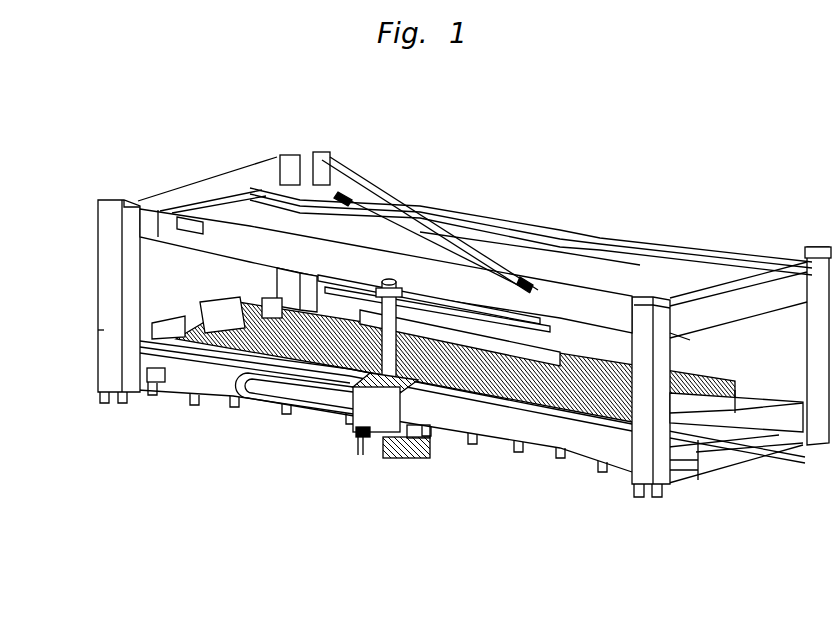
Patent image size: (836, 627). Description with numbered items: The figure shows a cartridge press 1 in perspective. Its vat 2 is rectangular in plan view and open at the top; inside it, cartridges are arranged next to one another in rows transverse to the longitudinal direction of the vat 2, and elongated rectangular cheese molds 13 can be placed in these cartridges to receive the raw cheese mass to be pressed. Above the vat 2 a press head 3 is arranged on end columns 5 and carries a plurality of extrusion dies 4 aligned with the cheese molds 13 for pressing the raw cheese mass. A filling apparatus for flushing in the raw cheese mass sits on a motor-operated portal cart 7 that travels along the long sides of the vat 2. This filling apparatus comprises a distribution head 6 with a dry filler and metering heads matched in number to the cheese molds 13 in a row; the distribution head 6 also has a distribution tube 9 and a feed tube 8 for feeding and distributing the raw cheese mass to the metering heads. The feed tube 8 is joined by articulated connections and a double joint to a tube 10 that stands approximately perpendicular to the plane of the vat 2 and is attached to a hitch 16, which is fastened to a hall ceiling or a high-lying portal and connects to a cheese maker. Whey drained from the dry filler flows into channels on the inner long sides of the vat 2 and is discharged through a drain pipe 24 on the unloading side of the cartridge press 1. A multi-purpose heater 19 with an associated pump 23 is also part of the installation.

The cartridge press 1 is at (520, 540).
The vat 2 is at (214, 377).
The press head 3 is at (386, 271).
The extrusion dies 4 is at (203, 266).
The end columns 5 is at (138, 266).
The distribution head 6 is at (563, 347).
The portal cart 7 is at (380, 317).
The feed tube 8 is at (465, 298).
The distribution tube 9 is at (547, 330).
The tube 10 is at (533, 298).
The cheese molds 13 is at (273, 300).
The hitch 16 is at (365, 161).
The multi-purpose heater 19 is at (353, 432).
The pump 23 is at (94, 333).
The drain pipe 24 is at (716, 470).